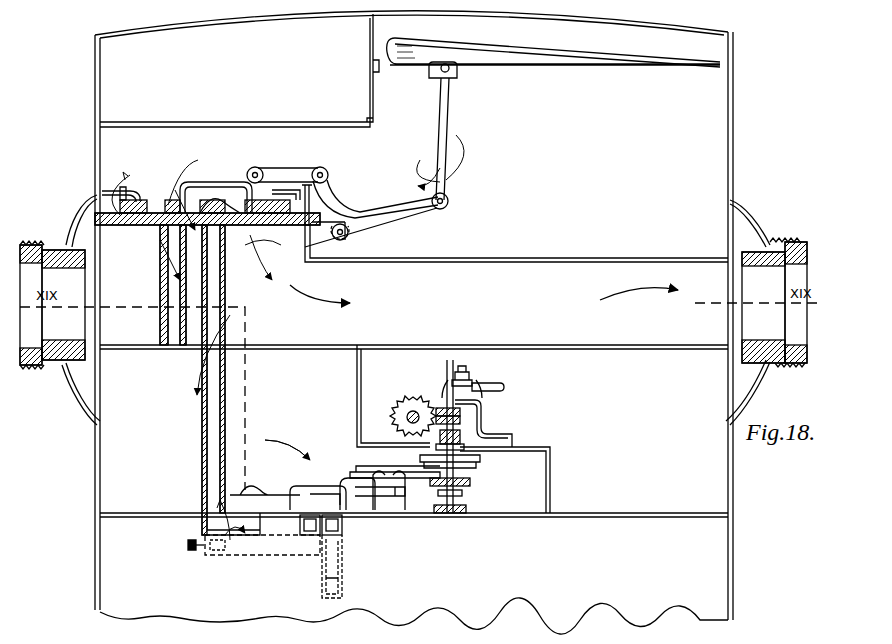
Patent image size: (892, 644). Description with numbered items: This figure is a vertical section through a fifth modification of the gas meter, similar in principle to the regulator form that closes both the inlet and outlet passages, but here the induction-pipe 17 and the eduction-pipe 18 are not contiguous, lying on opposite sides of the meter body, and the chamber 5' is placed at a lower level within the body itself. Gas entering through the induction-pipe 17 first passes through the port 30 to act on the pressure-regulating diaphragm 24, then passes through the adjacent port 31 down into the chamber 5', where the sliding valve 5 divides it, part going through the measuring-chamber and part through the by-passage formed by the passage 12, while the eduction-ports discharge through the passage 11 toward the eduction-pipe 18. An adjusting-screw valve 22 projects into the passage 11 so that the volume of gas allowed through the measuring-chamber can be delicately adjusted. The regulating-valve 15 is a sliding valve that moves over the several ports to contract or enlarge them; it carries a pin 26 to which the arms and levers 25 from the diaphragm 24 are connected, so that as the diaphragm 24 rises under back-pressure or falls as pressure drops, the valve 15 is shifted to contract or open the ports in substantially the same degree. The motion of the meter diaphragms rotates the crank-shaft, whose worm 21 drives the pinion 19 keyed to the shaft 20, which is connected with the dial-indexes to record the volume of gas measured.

The sliding valve 5 is at (335, 488).
The chamber 5' is at (295, 445).
The passage 11 is at (232, 552).
The passage 12 is at (210, 462).
The regulating-valve 15 is at (216, 184).
The induction-pipe 17 is at (52, 305).
The eduction-pipe 18 is at (774, 302).
The pinion 19 is at (398, 417).
The shaft 20 is at (453, 382).
The worm 21 is at (462, 418).
The valve 22 is at (188, 545).
The diaphragm 24 is at (547, 70).
The arms and levers 25 is at (378, 212).
The pin 26 is at (262, 166).
The port 30 is at (133, 226).
The port 31 is at (170, 282).